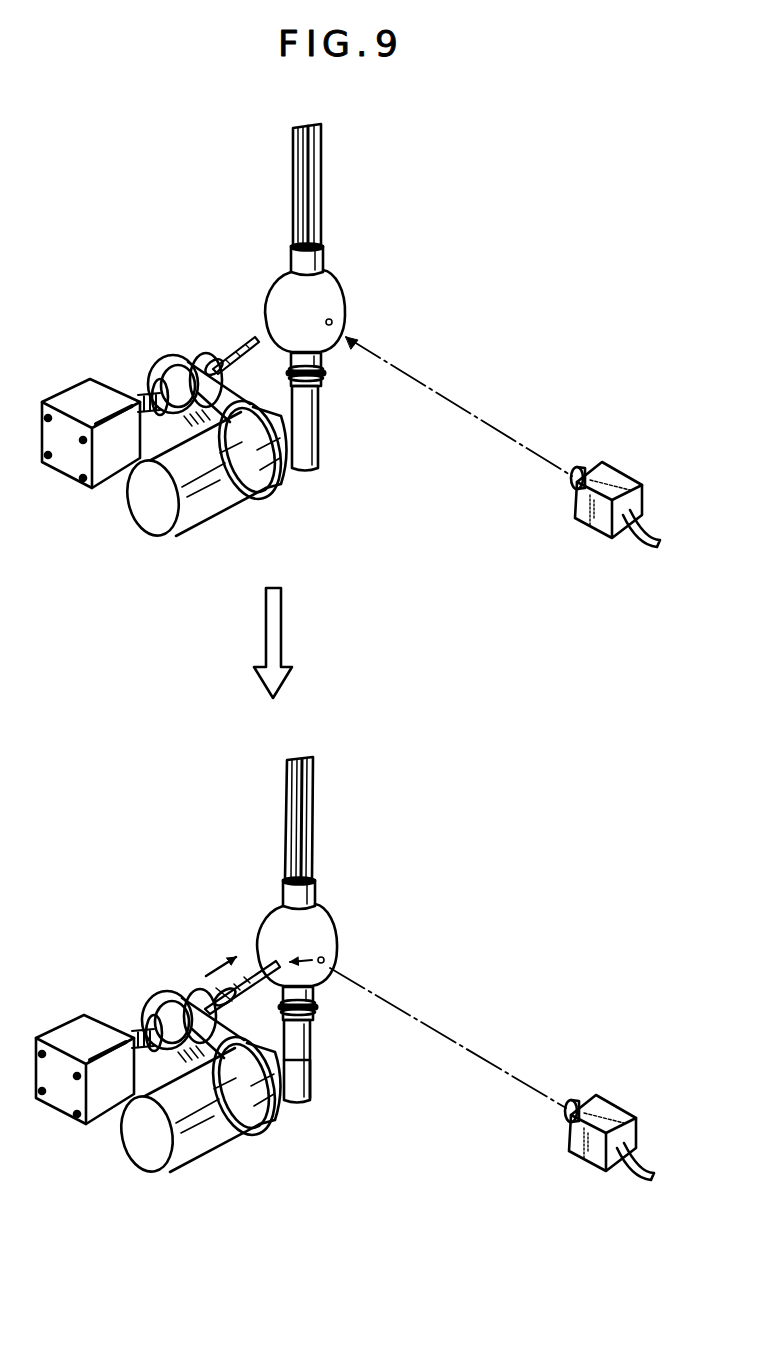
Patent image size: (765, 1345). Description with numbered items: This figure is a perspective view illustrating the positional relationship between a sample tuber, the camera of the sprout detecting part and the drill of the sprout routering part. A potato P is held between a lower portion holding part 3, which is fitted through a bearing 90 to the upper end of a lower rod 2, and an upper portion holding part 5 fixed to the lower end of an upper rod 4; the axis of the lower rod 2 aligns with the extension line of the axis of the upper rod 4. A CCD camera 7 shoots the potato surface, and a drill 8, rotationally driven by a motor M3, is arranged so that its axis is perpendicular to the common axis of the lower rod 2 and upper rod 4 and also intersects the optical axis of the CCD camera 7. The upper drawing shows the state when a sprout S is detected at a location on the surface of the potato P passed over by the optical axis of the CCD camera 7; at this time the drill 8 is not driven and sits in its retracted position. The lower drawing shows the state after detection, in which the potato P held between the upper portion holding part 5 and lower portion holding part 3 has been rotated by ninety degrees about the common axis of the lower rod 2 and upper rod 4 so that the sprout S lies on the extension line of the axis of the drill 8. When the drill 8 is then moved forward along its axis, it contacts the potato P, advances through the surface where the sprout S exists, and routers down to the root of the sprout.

The drill 8 is at (189, 346).
The motor M3 is at (148, 515).
The upper rod 4 is at (307, 795).
The upper portion holding part 5 is at (324, 256).
The potato P is at (333, 291).
The sprout S is at (333, 323).
The lower portion holding part 3 is at (323, 362).
The bearing 90 is at (323, 392).
The lower rod 2 is at (305, 1092).
The CCD camera 7 is at (607, 465).